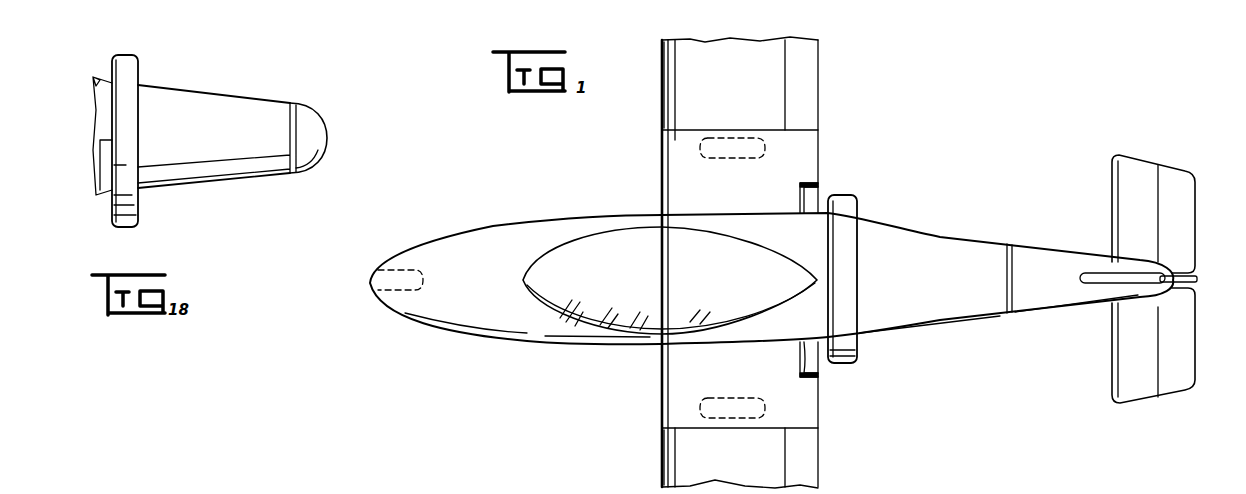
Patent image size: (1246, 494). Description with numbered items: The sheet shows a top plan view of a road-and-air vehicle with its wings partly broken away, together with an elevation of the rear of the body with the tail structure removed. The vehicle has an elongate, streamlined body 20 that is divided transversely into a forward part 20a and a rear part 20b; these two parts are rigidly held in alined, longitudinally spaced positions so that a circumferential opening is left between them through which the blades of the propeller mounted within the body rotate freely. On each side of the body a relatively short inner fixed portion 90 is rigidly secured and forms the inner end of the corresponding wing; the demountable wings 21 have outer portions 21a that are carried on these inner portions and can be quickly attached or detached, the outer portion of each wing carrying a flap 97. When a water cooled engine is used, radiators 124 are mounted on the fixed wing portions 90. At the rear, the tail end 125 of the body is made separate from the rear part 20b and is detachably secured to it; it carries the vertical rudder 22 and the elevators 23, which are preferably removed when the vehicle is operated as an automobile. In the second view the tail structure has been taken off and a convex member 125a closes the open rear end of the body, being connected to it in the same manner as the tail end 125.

In FIG. 1, the body 20 is at (558, 351).
In FIG. 1, the forward body part 20a is at (586, 350).
In FIG. 1, the rear body part 20b is at (888, 235).
In FIG. 18, the rear body part 20b is at (186, 184).
In FIG. 1, the demountable wings 21 is at (631, 153).
In FIG. 1, the outer wing portions 21a is at (680, 96).
In FIG. 1, the vertical rudder 22 is at (1197, 280).
In FIG. 1, the elevators 23 is at (1175, 390).
In FIG. 1, the inner fixed wing portion 90 is at (810, 160).
In FIG. 1, the flap 97 is at (810, 90).
In FIG. 1, the radiators 124 is at (813, 195).
In FIG. 1, the tail end 125 is at (1042, 255).
In FIG. 18, the convex closure member 125a is at (318, 141).